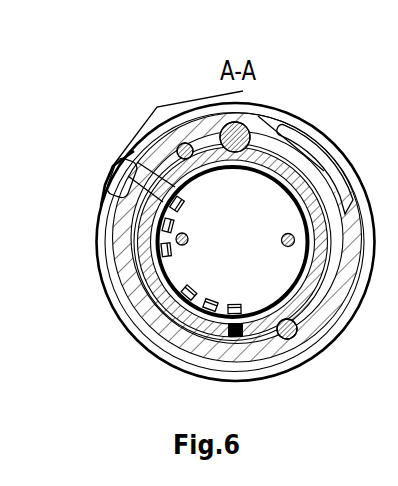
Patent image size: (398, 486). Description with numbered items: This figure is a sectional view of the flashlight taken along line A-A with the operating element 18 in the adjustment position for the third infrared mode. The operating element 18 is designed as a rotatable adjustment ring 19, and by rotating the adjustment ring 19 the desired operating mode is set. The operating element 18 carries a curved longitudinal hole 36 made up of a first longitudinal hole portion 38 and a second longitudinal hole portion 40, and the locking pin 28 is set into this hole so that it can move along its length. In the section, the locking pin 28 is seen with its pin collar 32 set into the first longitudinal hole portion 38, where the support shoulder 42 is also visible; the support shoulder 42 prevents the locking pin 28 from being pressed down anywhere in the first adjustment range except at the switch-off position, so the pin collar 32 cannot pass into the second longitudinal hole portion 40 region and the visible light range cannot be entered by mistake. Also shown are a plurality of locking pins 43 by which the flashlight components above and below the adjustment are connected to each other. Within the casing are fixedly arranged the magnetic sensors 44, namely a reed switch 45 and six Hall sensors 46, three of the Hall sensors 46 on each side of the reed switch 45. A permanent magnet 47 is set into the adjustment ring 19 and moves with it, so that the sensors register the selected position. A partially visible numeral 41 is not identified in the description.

The operating element 18 is at (304, 76).
The adjustment ring 19 is at (280, 124).
The locking pin 28 is at (204, 125).
The pin collar 32 is at (205, 128).
The curved longitudinal hole 36 is at (127, 160).
The first longitudinal hole portion 38 is at (177, 124).
The second longitudinal hole portion 40 is at (146, 366).
The housing portion 41 is at (326, 160).
The support shoulder 42 is at (138, 151).
The locking pins 43 is at (192, 160).
The magnetic sensors 44 is at (189, 215).
The reed switch 45 is at (153, 295).
The Hall sensors 46 is at (150, 255).
The permanent magnet 47 is at (283, 368).